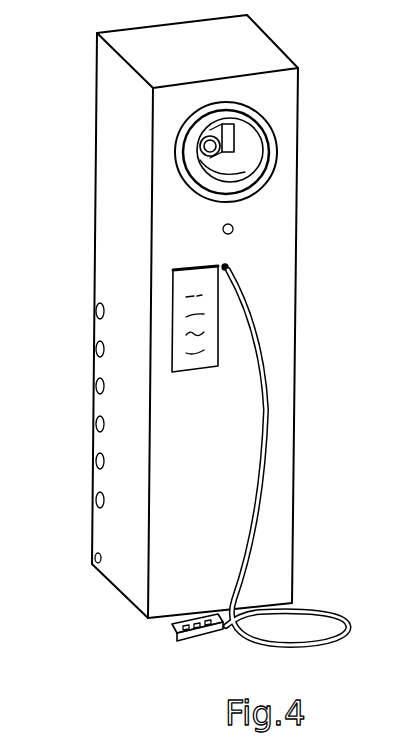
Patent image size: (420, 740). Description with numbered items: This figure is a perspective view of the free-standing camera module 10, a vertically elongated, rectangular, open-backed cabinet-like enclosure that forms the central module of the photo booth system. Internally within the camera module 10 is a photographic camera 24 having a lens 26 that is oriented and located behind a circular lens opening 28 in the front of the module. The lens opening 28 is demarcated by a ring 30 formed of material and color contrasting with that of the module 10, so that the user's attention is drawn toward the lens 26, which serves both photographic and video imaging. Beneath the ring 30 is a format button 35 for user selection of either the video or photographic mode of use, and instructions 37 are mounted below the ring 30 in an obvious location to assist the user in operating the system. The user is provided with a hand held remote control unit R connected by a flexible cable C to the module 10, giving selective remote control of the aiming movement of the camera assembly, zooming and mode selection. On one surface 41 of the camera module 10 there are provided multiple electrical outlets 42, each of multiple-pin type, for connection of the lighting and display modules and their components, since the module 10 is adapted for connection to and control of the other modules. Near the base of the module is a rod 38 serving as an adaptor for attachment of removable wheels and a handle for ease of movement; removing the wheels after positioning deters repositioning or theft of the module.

The camera module 10 is at (163, 138).
The photographic camera 24 is at (218, 130).
The lens 26 is at (204, 150).
The lens opening 28 is at (245, 160).
The ring 30 is at (258, 183).
The format button 35 is at (233, 232).
The instructions 37 is at (197, 362).
The rod 38 is at (92, 566).
The surface 41 is at (135, 272).
The electrical outlets 42 is at (96, 496).
The remote control unit R is at (192, 637).
The flexible cable C is at (350, 631).